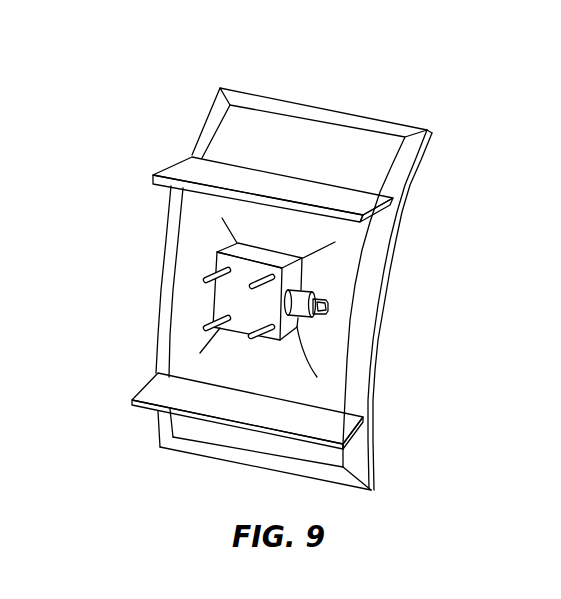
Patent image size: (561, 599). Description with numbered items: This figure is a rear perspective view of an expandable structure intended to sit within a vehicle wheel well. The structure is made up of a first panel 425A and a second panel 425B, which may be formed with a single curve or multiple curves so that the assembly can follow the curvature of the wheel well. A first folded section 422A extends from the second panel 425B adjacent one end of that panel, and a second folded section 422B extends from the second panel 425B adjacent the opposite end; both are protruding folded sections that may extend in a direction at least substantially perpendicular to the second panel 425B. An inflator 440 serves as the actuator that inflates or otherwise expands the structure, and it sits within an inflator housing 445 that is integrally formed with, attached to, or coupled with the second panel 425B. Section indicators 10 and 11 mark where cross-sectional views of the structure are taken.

The section line 10- 10 is at (172, 132).
The section line 11- 11 is at (426, 112).
The first panel 425A is at (377, 353).
The second panel 425B is at (278, 133).
The first folded section 422A is at (375, 214).
The second folded section 422B is at (313, 423).
The inflator housing 445 is at (222, 302).
The inflator 440 is at (312, 293).